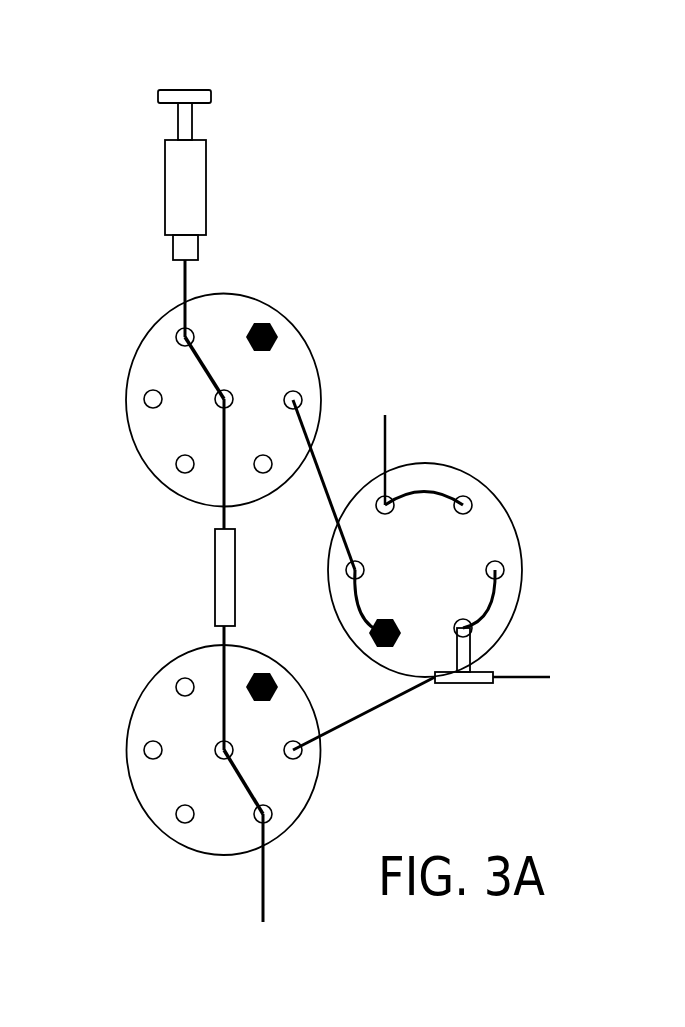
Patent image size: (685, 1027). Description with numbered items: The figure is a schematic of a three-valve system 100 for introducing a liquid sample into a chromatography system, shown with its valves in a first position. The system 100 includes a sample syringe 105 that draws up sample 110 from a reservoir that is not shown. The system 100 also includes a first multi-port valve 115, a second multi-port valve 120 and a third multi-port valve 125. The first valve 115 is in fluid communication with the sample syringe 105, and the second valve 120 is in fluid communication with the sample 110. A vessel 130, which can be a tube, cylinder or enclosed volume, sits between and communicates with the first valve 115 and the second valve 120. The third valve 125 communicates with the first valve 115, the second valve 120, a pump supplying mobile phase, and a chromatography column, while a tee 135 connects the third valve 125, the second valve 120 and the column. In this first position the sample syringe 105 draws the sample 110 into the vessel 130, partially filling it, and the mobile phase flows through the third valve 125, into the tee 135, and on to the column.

The system 100 is at (495, 270).
The sample syringe 105 is at (97, 202).
The sample 110 is at (294, 997).
The first multi-port valve 115 is at (74, 413).
The second multi-port valve 120 is at (96, 743).
The third multi-port valve 125 is at (564, 519).
The vessel 130 is at (174, 607).
The tee 135 is at (444, 760).